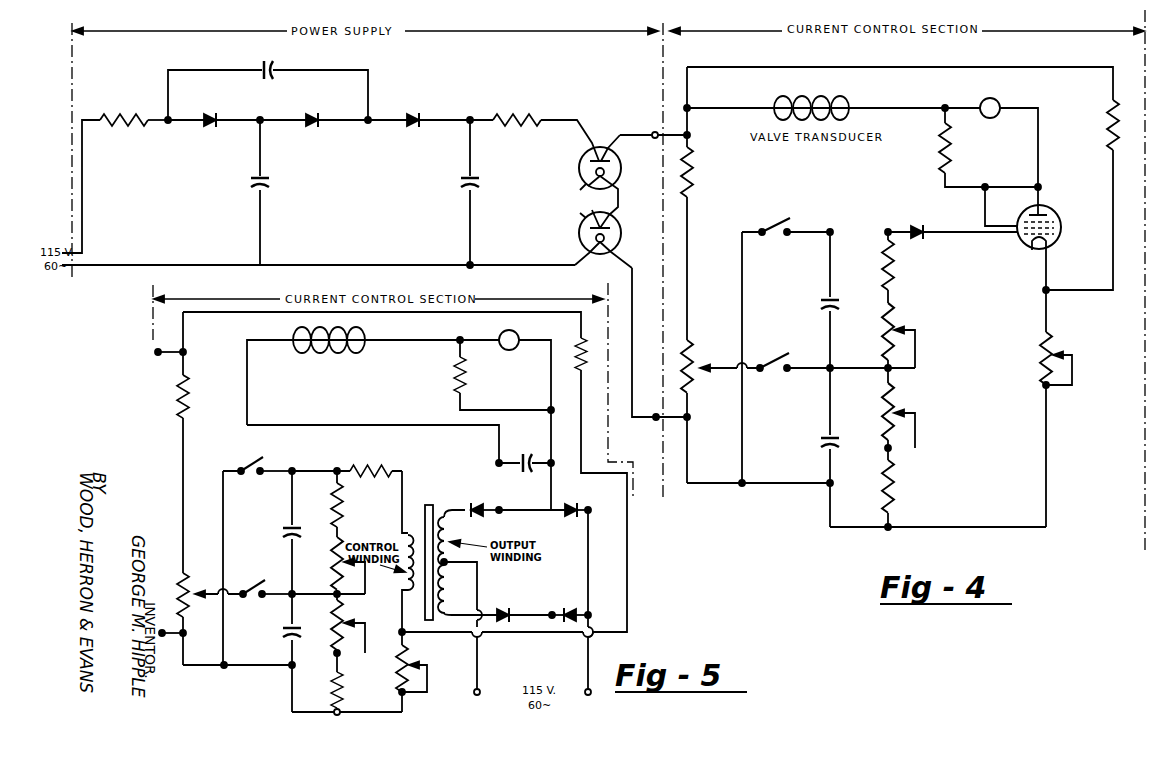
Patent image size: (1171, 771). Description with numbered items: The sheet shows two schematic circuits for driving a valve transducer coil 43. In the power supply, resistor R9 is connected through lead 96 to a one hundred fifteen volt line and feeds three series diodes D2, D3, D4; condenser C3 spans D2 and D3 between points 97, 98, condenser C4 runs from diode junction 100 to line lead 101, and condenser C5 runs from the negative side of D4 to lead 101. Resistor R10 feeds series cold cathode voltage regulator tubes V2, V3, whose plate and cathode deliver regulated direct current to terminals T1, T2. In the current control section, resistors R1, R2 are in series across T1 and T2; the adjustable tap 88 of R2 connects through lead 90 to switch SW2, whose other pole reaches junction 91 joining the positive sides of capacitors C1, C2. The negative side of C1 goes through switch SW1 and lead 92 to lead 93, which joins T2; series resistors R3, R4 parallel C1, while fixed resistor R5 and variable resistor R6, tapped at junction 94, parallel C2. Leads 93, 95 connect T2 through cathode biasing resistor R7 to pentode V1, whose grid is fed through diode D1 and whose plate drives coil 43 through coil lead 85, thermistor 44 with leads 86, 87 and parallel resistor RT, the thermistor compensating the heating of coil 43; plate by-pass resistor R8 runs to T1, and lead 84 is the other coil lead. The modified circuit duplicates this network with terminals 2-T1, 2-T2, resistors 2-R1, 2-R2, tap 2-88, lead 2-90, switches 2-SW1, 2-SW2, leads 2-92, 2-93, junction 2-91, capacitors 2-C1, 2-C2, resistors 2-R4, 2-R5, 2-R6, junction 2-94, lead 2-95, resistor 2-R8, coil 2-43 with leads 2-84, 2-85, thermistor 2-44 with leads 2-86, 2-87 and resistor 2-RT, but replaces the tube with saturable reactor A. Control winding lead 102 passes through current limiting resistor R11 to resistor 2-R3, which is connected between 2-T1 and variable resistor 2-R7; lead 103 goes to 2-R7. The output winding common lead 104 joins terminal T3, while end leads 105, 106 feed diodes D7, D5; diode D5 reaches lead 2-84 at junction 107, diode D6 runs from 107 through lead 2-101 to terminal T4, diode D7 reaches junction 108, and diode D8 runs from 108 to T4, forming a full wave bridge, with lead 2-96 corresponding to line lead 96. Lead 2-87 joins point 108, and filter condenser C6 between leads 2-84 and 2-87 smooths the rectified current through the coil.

In FIG. 4, the lead 96 is at (84, 188).
In FIG. 4, the point 97 is at (169, 123).
In FIG. 4, the point 98 is at (369, 124).
In FIG. 4, the point 100 is at (262, 117).
In FIG. 4, the line lead 101 is at (180, 264).
In FIG. 4, the resistor R9 is at (134, 105).
In FIG. 4, the resistor R10 is at (514, 112).
In FIG. 4, the condenser C3 is at (260, 66).
In FIG. 4, the condenser C4 is at (256, 188).
In FIG. 4, the condenser C5 is at (466, 188).
In FIG. 4, the diode D2 is at (213, 128).
In FIG. 4, the diode D3 is at (315, 128).
In FIG. 4, the diode D4 is at (417, 128).
In FIG. 4, the voltage regulator tube V2 is at (578, 169).
In FIG. 4, the voltage regulator tube V3 is at (578, 232).
In FIG. 4, the terminal T1 is at (652, 133).
In FIG. 4, the terminal T2 is at (656, 421).
In FIG. 4, the coil lead 84 is at (747, 103).
In FIG. 4, the coil 43 is at (812, 98).
In FIG. 4, the coil lead 85 is at (868, 107).
In FIG. 4, the thermistor 44 is at (983, 101).
In FIG. 4, the lead 86 is at (947, 120).
In FIG. 4, the resistor RT is at (952, 152).
In FIG. 4, the lead 87 is at (1037, 148).
In FIG. 4, the plate by-pass resistor R8 is at (1108, 119).
In FIG. 4, the resistor R1 is at (694, 172).
In FIG. 4, the single pole, single throw switch SW1 is at (778, 223).
In FIG. 4, the lead 92 is at (744, 268).
In FIG. 4, the diode D1 is at (915, 225).
In FIG. 4, the pentode V1 is at (1062, 236).
In FIG. 4, the resistor R3 is at (900, 276).
In FIG. 4, the capacitor C1 is at (819, 307).
In FIG. 4, the resistor R4 is at (884, 329).
In FIG. 4, the variable resistor R2 is at (696, 347).
In FIG. 4, the adjustable tap 88 is at (724, 372).
In FIG. 4, the single pole, single throw switch SW2 is at (788, 350).
In FIG. 4, the lead 90 is at (757, 372).
In FIG. 4, the junction 91 is at (826, 366).
In FIG. 4, the variable resistor R6 is at (884, 403).
In FIG. 4, the junction 94 is at (877, 445).
In FIG. 4, the capacitor C2 is at (822, 447).
In FIG. 4, the lead 93 is at (692, 470).
In FIG. 4, the fixed resistor R5 is at (901, 495).
In FIG. 4, the lead 95 is at (928, 530).
In FIG. 4, the cathode biasing variable resistor R7 is at (1040, 372).
In FIG. 5, the terminal 2-T1 is at (155, 353).
In FIG. 5, the resistor 2-R1 is at (180, 393).
In FIG. 5, the valve transducer coil 2-43 is at (290, 335).
In FIG. 5, the coil lead 2-85 is at (400, 339).
In FIG. 5, the thermistor 2-44 is at (503, 333).
In FIG. 5, the resistor 2-R8 is at (578, 346).
In FIG. 5, the lead 2-86 is at (458, 353).
In FIG. 5, the resistor 2-RT is at (455, 379).
In FIG. 5, the lead 2-87 is at (550, 376).
In FIG. 5, the lead 2-84 is at (315, 424).
In FIG. 5, the filter condenser C6 is at (527, 457).
In FIG. 5, the single pole, single throw switch 2-SW1 is at (245, 456).
In FIG. 5, the lead 2-92 is at (224, 500).
In FIG. 5, the current limiting resistor R11 is at (347, 457).
In FIG. 5, the resistor 2-R3 is at (339, 497).
In FIG. 5, the lead 102 is at (401, 525).
In FIG. 5, the lead 103 is at (401, 611).
In FIG. 5, the saturable reactor A is at (431, 497).
In FIG. 5, the end lead 106 is at (461, 512).
In FIG. 5, the diode D5 is at (480, 503).
In FIG. 5, the junction 107 is at (502, 508).
In FIG. 5, the diode D6 is at (580, 506).
In FIG. 5, the common lead 104 is at (479, 575).
In FIG. 5, the end lead 105 is at (464, 613).
In FIG. 5, the diode D7 is at (500, 608).
In FIG. 5, the junction 108 is at (550, 612).
In FIG. 5, the diode D8 is at (568, 607).
In FIG. 5, the lead 2-101 is at (586, 668).
In FIG. 5, the lead 2-96 is at (479, 669).
In FIG. 5, the terminal T3 is at (474, 692).
In FIG. 5, the terminal T4 is at (586, 690).
In FIG. 5, the capacitor 2-C1 is at (283, 533).
In FIG. 5, the variable resistor 2-R2 is at (183, 582).
In FIG. 5, the adjustable tap 2-88 is at (211, 598).
In FIG. 5, the single pole, single throw switch 2-SW2 is at (258, 572).
In FIG. 5, the lead 2-90 is at (229, 598).
In FIG. 5, the junction 2-91 is at (290, 591).
In FIG. 5, the resistor 2-R4 is at (333, 571).
In FIG. 5, the variable resistor 2-R6 is at (332, 620).
In FIG. 5, the junction 2-94 is at (318, 660).
In FIG. 5, the capacitor 2-C2 is at (284, 637).
In FIG. 5, the terminal 2-T2 is at (162, 638).
In FIG. 5, the lead 2-93 is at (185, 662).
In FIG. 5, the fixed resistor 2-R5 is at (347, 693).
In FIG. 5, the variable resistor 2-R7 is at (396, 673).
In FIG. 5, the lead 2-95 is at (364, 709).